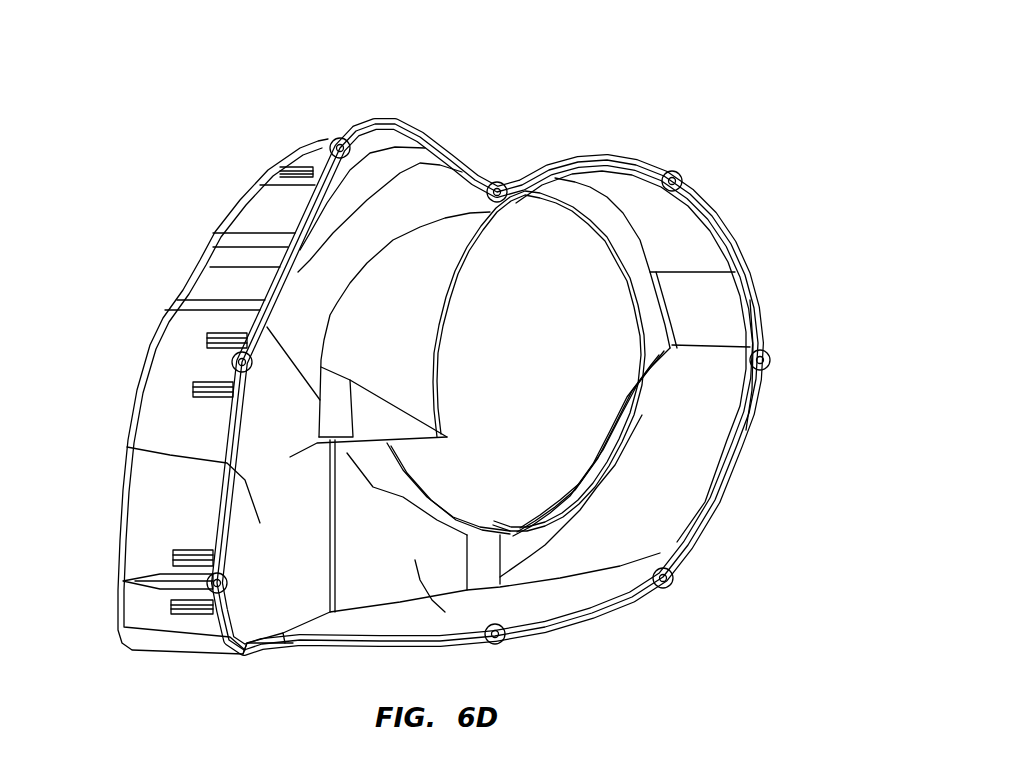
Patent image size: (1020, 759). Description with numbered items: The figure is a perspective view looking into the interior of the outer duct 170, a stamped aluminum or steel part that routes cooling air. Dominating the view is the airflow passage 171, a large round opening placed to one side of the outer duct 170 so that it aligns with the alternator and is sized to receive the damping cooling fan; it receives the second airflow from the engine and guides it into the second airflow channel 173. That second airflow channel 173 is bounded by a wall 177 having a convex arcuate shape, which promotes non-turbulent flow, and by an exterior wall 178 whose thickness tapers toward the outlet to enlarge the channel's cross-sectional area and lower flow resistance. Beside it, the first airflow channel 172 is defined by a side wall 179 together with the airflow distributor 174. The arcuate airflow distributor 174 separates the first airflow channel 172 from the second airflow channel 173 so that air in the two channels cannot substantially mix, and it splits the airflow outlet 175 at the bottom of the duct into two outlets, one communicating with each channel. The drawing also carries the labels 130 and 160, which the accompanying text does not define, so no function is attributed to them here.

The housing 130 is at (438, 379).
The mounting flange 160 is at (445, 130).
The outer duct 170 is at (316, 158).
The airflow passage 171 is at (557, 232).
The first airflow channel 172 is at (300, 333).
The second airflow channel 173 is at (657, 500).
The airflow distributor 174 is at (127, 447).
The airflow outlet 175 is at (262, 650).
The wall 177 is at (750, 428).
The exterior wall 178 is at (517, 617).
The side wall 179 is at (175, 362).